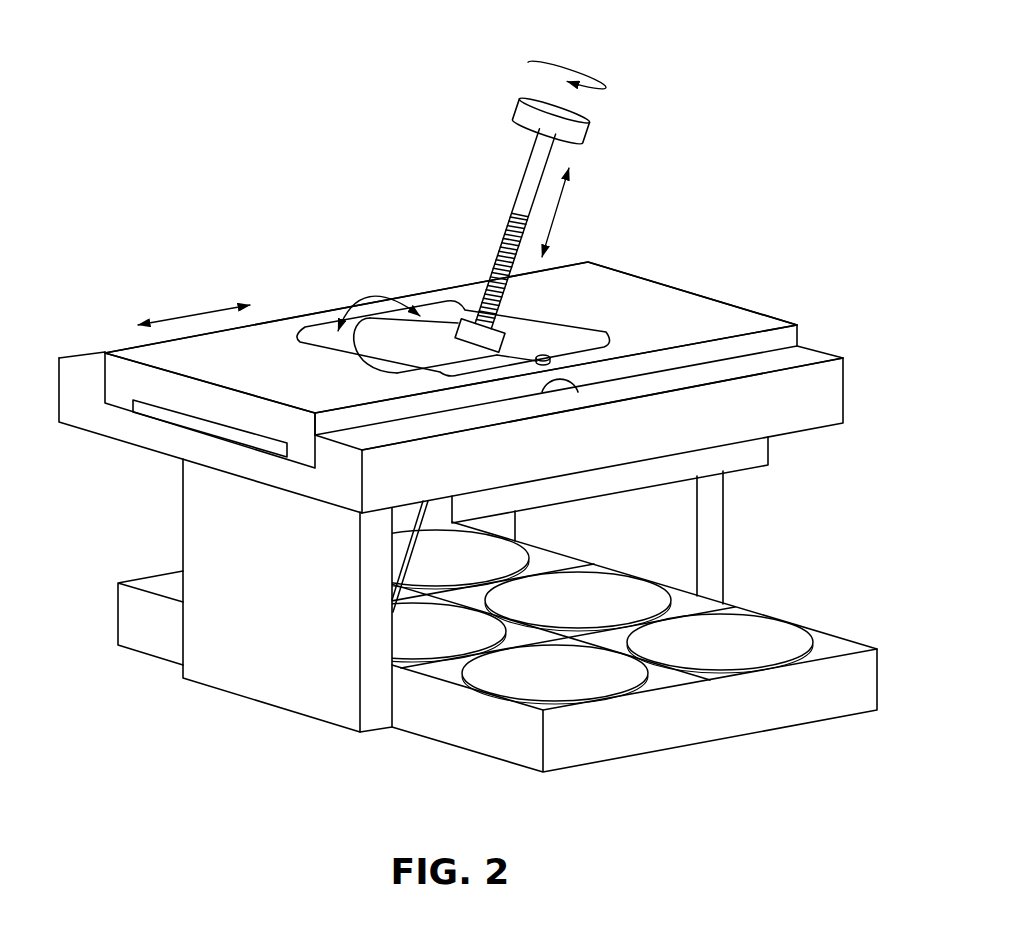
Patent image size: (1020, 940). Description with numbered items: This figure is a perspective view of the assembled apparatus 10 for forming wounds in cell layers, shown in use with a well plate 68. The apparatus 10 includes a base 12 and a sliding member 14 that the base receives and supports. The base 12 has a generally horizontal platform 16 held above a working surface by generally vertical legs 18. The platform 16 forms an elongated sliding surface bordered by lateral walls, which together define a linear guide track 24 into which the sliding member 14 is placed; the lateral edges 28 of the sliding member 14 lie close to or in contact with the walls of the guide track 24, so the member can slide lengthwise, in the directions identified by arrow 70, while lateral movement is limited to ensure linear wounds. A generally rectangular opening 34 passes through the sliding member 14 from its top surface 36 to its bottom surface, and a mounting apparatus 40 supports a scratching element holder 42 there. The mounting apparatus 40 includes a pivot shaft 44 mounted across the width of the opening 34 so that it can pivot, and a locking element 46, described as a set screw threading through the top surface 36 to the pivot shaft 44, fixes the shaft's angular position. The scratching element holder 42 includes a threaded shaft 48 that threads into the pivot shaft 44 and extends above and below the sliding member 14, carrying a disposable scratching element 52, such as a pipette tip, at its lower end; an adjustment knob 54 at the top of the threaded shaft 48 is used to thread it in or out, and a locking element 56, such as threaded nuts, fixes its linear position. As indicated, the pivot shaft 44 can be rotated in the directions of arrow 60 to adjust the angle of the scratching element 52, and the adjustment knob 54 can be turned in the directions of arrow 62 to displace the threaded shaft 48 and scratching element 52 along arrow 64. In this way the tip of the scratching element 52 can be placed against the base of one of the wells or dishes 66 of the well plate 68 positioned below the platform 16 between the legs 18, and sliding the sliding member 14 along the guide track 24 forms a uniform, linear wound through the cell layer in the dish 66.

The apparatus 10 is at (107, 206).
The base 12 is at (855, 334).
The sliding member 14 is at (765, 286).
The platform 16 is at (95, 452).
The legs 18 is at (226, 679).
The guide track 24 is at (663, 366).
The lateral edges 28 is at (603, 372).
The opening 34 is at (319, 328).
The top surface 36 is at (647, 292).
The mounting apparatus 40 is at (336, 270).
The scratching element holder 42 is at (437, 208).
The pivot shaft 44 is at (397, 355).
The locking element 46 is at (543, 355).
The threaded shaft 48 is at (500, 243).
The scratching element 52 is at (418, 550).
The adjustment knob 54 is at (584, 130).
The locking element 56 is at (462, 338).
The arrow 60 is at (375, 290).
The arrow 62 is at (568, 63).
The arrow 64 is at (560, 212).
The wells or dishes 66 is at (400, 640).
The well plate 68 is at (497, 658).
The arrow 70 is at (190, 310).